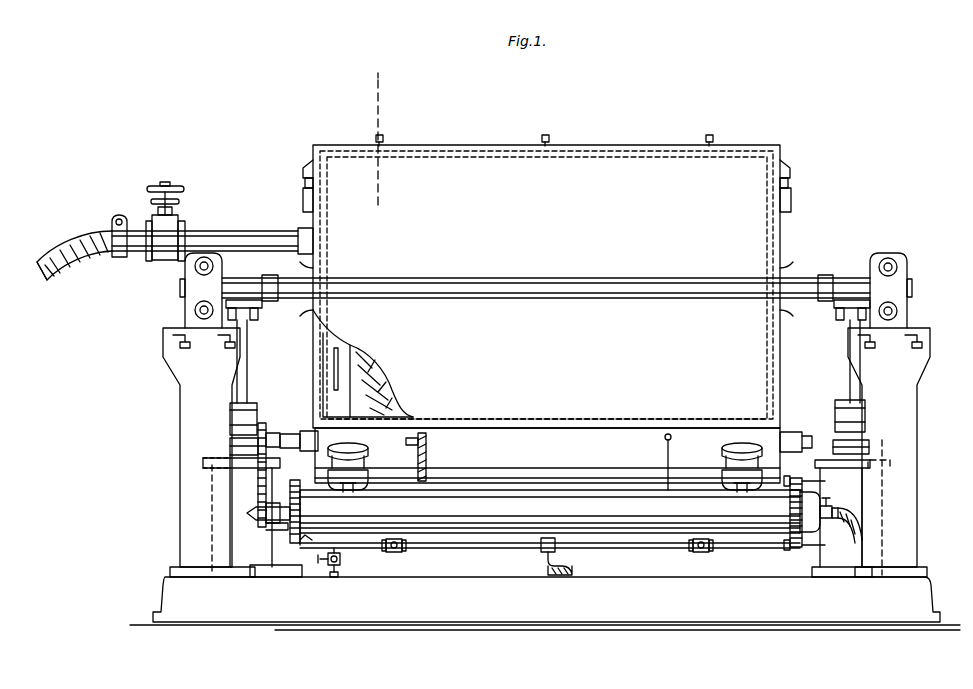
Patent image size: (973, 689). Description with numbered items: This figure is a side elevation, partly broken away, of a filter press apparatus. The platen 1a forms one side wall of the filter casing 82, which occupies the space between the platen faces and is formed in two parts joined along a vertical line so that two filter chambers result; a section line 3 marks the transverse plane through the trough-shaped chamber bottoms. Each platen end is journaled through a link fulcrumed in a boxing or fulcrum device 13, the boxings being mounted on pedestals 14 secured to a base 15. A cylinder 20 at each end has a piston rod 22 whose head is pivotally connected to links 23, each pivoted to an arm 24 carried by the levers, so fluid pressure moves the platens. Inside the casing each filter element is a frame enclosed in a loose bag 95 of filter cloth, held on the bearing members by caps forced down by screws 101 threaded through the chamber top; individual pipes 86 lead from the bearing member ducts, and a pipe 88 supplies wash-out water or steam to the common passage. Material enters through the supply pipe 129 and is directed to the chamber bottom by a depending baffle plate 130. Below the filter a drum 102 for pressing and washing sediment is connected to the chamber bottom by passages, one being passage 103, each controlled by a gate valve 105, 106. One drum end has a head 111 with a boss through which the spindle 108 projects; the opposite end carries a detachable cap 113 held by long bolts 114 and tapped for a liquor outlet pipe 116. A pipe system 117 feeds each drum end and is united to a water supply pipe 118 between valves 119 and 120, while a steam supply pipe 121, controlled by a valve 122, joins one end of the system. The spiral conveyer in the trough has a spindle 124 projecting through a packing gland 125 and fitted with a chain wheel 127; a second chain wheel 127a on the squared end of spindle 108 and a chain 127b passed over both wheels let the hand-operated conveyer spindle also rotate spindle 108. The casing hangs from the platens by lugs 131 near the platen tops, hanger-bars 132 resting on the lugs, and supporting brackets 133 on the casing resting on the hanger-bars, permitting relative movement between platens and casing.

The section line 3 is at (395, 76).
The platen 1a is at (546, 286).
The screws 101 is at (383, 143).
The supporting brackets 133 is at (306, 166).
The hanger-bar 132 is at (305, 184).
The lugs 131 is at (304, 205).
The supply pipe 129 is at (266, 229).
The boxing or fulcrum device 13 is at (546, 290).
The arm 24 is at (250, 319).
The links 23 is at (245, 392).
The pedestals 14 is at (546, 452).
The piston rod 22 is at (230, 439).
The chain wheel 127 is at (263, 437).
The chain wheel 127a is at (262, 525).
The chain 127b is at (240, 453).
The spindle 124 is at (262, 478).
The spindle 108 is at (262, 510).
The head 111 is at (295, 502).
The packing gland 125 is at (305, 438).
The gate valve 105 is at (366, 455).
The gate valve 106 is at (732, 458).
The passage 103 is at (352, 488).
The pipe 88 is at (426, 456).
The pipes 86 is at (664, 472).
The filter casing 82 is at (322, 392).
The baffle plates 130 is at (334, 362).
The bag 95 is at (386, 398).
The drum 102 is at (550, 511).
The cap 113 is at (820, 500).
The long bolts 114 is at (815, 481).
The pipe 116 is at (866, 541).
The cylinder 20 is at (273, 556).
The base 15 is at (545, 603).
The pipe system 117 is at (550, 549).
The water supply pipe 118 is at (565, 556).
The valve 119 is at (398, 552).
The valve 120 is at (709, 552).
The steam supply pipe 121 is at (340, 566).
The valve 122 is at (330, 569).